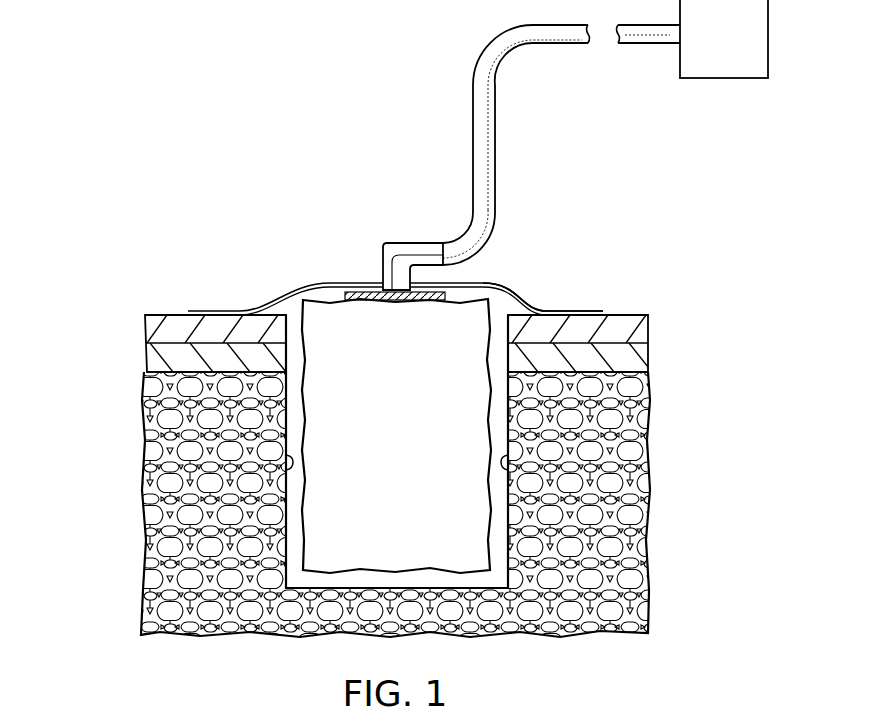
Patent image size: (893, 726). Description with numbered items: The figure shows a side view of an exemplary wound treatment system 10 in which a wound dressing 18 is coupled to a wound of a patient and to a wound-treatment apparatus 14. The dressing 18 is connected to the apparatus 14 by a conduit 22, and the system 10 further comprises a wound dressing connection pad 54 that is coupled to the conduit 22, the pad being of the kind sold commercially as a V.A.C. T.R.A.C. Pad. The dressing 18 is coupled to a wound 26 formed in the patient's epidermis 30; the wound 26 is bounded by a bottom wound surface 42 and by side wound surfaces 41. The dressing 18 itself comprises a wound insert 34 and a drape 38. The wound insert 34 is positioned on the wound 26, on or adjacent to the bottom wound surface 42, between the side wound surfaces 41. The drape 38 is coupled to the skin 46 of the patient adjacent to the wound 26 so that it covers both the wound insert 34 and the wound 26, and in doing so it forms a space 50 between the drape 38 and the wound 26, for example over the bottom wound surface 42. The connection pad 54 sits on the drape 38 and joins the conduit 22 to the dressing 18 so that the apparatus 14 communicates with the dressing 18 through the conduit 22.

The wound treatment system 10 is at (284, 58).
The wound-treatment apparatus 14 is at (710, 50).
The wound dressing 18 is at (337, 248).
The conduit 22 is at (473, 148).
The wound 26 is at (124, 566).
The epidermis 30 is at (371, 305).
The wound insert 34 is at (382, 445).
The drape 38 is at (530, 299).
The side wound surfaces 41 is at (286, 458).
The bottom wound surface 42 is at (296, 580).
The skin 46 is at (178, 315).
The space 50 is at (289, 300).
The wound dressing connection pad 54 is at (417, 243).